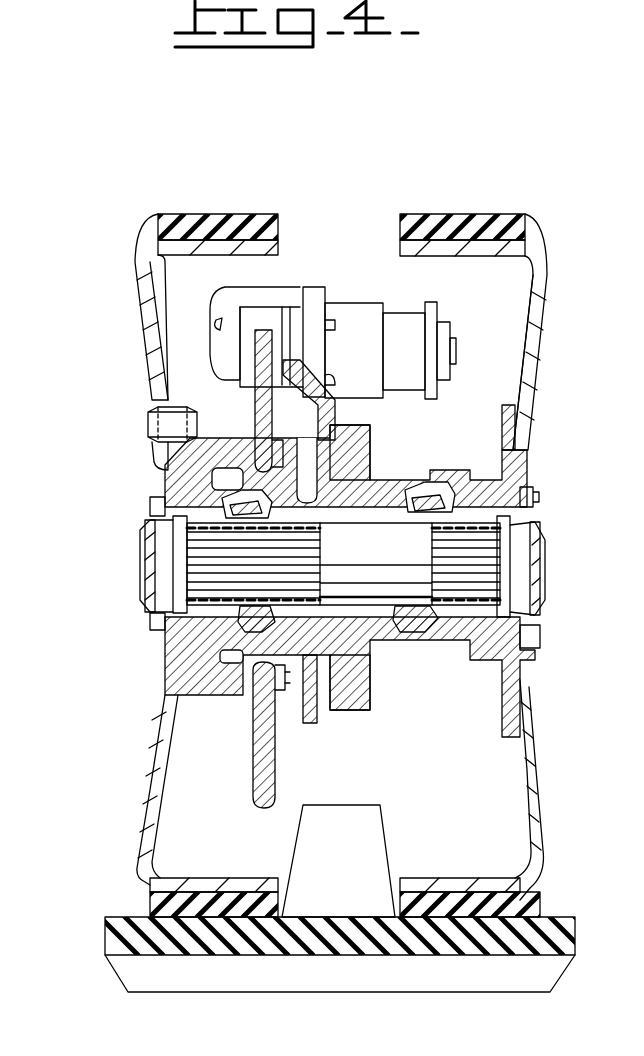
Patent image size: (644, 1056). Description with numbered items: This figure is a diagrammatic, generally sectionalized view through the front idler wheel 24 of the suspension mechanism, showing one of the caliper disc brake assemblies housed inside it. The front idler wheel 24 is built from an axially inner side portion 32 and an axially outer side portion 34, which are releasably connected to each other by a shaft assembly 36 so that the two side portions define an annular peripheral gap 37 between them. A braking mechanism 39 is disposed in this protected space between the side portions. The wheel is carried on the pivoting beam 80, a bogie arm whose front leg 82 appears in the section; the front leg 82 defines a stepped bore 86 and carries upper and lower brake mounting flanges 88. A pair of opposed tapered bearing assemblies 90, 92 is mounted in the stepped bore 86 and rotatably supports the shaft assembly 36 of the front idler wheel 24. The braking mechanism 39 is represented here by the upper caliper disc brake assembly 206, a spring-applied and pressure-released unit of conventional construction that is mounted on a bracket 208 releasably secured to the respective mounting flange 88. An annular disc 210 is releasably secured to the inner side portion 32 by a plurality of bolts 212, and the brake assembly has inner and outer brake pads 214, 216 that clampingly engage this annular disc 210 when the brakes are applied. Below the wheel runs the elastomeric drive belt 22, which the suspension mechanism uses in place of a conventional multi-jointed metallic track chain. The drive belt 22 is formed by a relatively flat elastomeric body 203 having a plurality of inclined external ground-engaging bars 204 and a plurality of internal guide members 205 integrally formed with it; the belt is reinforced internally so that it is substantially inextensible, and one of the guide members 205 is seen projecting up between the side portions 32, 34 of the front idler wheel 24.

The elastomeric drive belt 22 is at (120, 912).
The front idler wheel 24 is at (149, 382).
The axially inner side portion 32 is at (160, 813).
The axially outer side portion 34 is at (525, 806).
The shaft assembly 36 is at (160, 560).
The annular peripheral gap 37 is at (403, 236).
The braking mechanism 39 is at (190, 307).
The pivoting beam 80 is at (375, 684).
The front leg 82 is at (408, 488).
The stepped bore 86 is at (380, 532).
The brake mounting flanges 88 is at (352, 424).
The tapered bearing assembly 90 is at (285, 615).
The tapered bearing assembly 92 is at (416, 612).
The elastomeric body 203 is at (105, 938).
The ground-engaging bars 204 is at (135, 978).
The internal guide members 205 is at (308, 851).
The upper caliper disc brake assembly 206 is at (358, 305).
The bracket 208 is at (352, 458).
The annular disc 210 is at (258, 768).
The bolts 212 is at (286, 690).
The inner brake pad 214 is at (258, 360).
The outer brake pad 216 is at (268, 400).